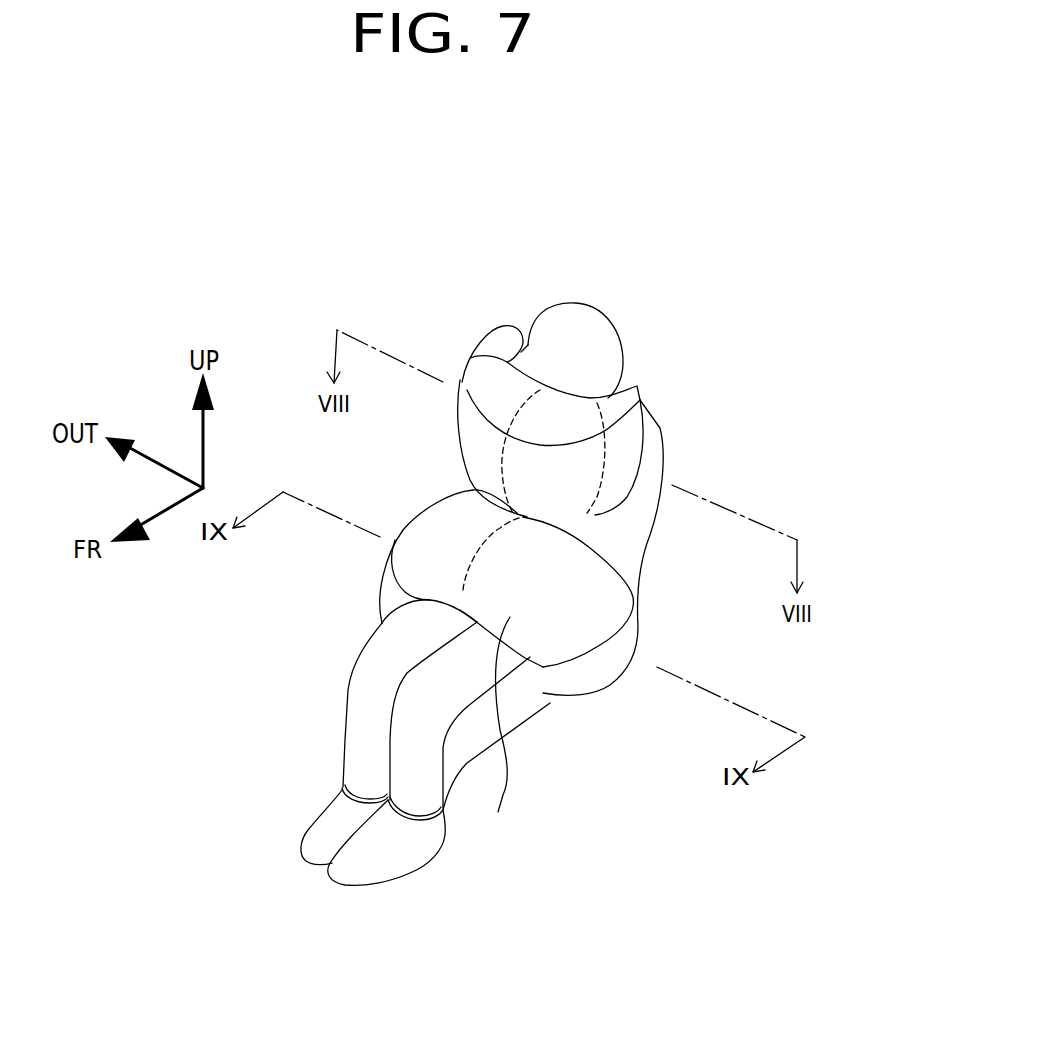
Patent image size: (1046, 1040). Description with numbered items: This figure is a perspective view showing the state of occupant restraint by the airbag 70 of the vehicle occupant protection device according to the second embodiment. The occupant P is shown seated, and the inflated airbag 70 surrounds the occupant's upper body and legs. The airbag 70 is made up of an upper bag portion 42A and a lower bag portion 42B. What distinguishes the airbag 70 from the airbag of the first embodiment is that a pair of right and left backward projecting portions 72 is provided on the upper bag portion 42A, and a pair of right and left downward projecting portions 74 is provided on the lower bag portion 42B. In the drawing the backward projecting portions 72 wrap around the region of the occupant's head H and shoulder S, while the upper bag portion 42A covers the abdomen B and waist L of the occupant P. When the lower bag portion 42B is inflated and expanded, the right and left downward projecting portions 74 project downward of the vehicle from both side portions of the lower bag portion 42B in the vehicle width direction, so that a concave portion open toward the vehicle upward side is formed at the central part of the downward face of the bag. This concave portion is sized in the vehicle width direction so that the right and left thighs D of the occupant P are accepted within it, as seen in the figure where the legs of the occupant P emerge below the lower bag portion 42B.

The airbag 70 is at (501, 532).
The backward projecting portions 72 is at (498, 327).
The downward projecting portions 74 is at (373, 592).
The upper bag portion 42A is at (455, 440).
The lower bag portion 42B is at (496, 732).
The occupant P is at (520, 552).
The head H is at (605, 320).
The shoulder S is at (653, 437).
The abdomen B is at (617, 532).
The waist L is at (643, 578).
The thighs D is at (543, 710).